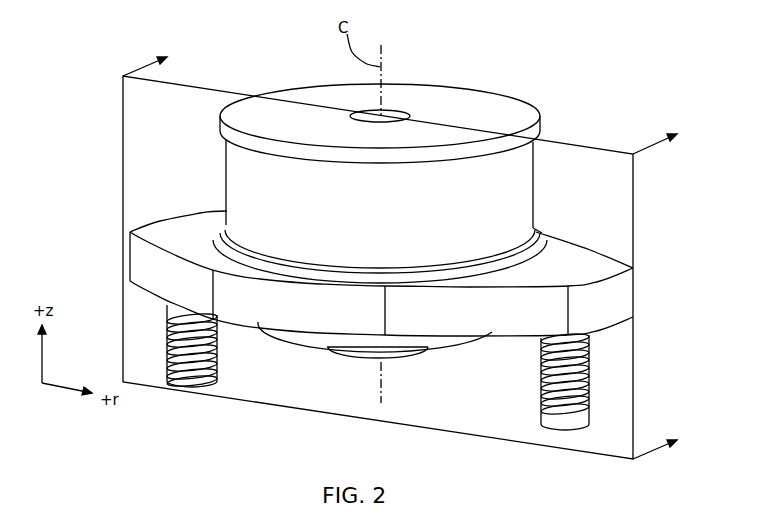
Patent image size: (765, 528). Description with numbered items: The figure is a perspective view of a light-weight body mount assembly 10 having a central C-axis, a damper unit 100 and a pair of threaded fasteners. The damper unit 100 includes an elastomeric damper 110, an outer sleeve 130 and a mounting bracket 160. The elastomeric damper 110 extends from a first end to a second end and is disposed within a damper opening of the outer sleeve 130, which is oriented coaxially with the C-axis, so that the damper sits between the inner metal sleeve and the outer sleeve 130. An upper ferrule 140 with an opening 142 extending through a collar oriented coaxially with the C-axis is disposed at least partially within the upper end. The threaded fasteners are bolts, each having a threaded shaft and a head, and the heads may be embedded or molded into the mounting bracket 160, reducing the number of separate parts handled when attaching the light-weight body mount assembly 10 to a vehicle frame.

The light-weight body mount assembly 10 is at (598, 55).
The damper unit 100 is at (587, 137).
The elastomeric damper 110 is at (537, 188).
The outer sleeve 130 is at (217, 248).
The upper ferrule 140 is at (313, 97).
The opening 142 is at (385, 112).
The mounting bracket 160 is at (118, 244).